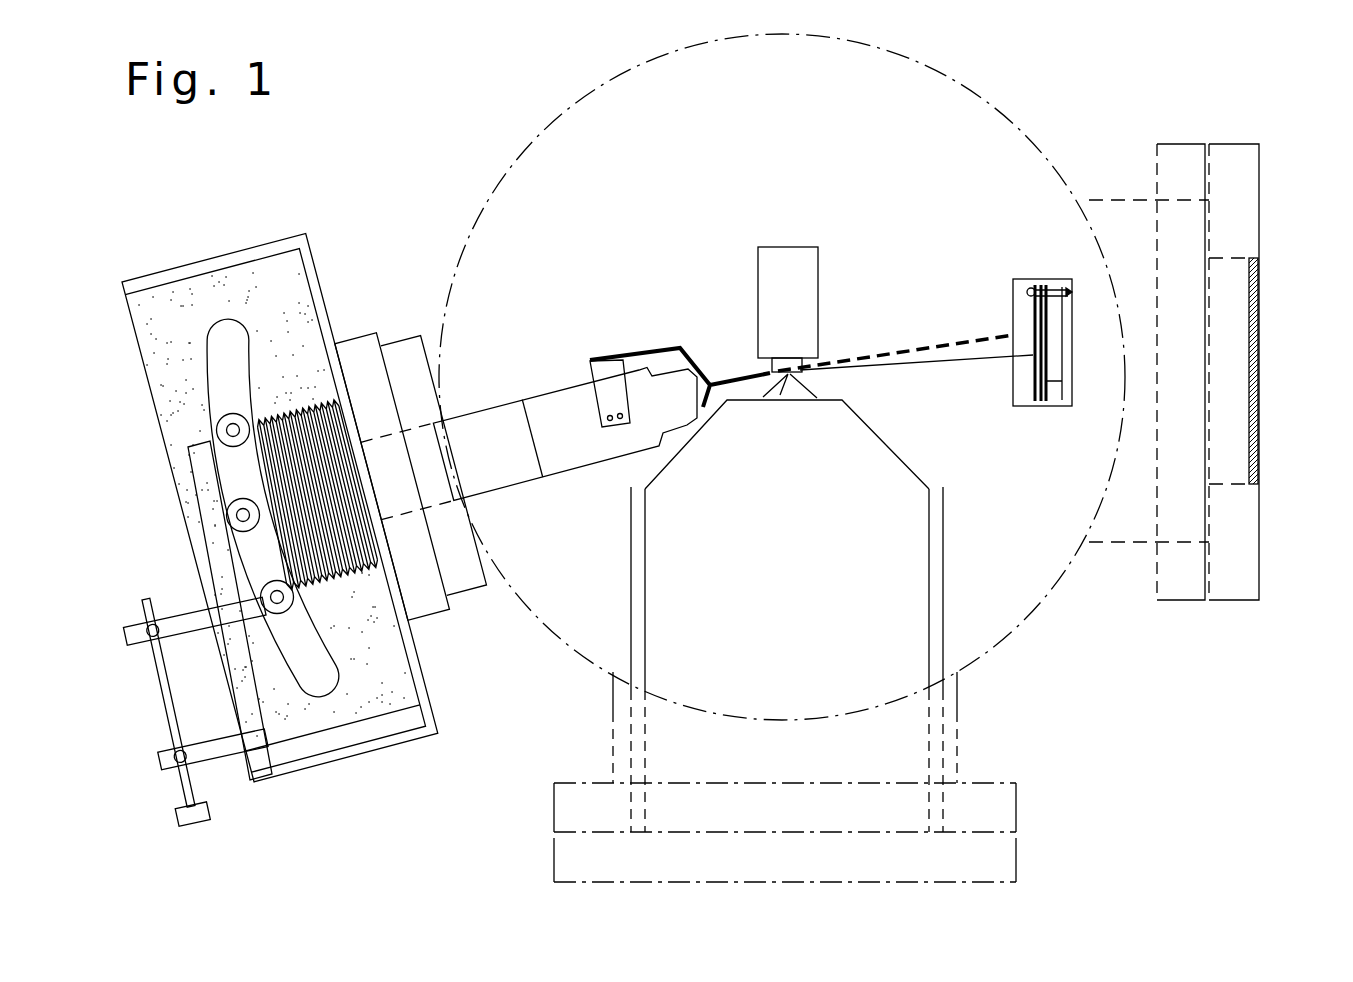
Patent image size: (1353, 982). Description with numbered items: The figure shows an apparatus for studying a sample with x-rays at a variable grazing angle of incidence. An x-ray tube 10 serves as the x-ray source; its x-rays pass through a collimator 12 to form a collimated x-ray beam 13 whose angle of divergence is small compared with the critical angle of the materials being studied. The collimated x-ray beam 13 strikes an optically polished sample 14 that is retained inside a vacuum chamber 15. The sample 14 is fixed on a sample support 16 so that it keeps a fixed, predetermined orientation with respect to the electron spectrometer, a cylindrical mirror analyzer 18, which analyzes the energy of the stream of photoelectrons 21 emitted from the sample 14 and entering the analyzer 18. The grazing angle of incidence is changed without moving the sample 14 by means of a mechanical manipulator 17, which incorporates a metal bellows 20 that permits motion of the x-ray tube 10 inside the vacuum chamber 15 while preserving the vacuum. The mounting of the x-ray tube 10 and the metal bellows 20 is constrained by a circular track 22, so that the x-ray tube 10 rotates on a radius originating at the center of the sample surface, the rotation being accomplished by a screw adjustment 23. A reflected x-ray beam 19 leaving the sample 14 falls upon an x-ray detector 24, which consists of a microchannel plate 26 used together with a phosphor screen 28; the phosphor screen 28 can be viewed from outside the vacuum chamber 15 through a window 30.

The x-ray tube 10 is at (553, 407).
The collimator 12 is at (733, 357).
The collimated x-ray beam 13 is at (910, 343).
The sample 14 is at (780, 370).
The vacuum chamber 15 is at (1022, 108).
The sample support 16 is at (803, 275).
The mechanical manipulator 17 is at (417, 747).
The cylindrical mirror analyzer 18 is at (899, 475).
The reflected x-ray beam 19 is at (930, 368).
The metal bellows 20 is at (337, 585).
The photoelectrons 21 is at (788, 390).
The circular track 22 is at (233, 337).
The screw adjustment 23 is at (170, 725).
The x-ray detector 24 is at (1050, 410).
The microchannel plate 26 is at (1033, 332).
The phosphor screen 28 is at (1058, 370).
The window 30 is at (1265, 387).